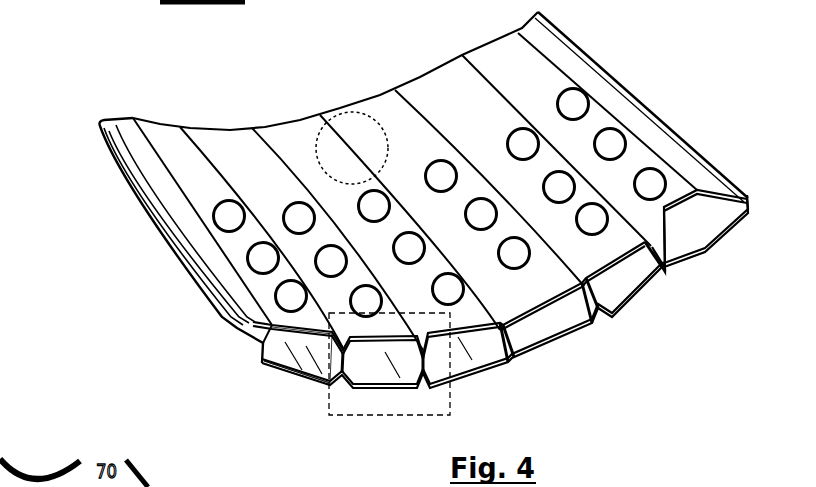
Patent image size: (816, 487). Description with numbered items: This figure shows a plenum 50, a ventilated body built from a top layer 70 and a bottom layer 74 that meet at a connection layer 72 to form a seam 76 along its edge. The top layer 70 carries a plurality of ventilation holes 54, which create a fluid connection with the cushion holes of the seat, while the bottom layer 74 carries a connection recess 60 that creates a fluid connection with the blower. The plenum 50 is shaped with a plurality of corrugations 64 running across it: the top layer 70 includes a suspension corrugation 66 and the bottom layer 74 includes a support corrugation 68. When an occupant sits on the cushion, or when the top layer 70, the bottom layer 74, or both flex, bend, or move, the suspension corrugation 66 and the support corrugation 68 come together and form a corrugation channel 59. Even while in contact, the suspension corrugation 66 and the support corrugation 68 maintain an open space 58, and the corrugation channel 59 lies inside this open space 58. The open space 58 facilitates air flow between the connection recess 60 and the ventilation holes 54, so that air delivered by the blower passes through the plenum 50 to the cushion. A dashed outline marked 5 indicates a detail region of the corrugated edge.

The plenum 50 is at (665, 62).
The ventilation holes 54 is at (575, 101).
The open space 58 is at (541, 378).
The corrugation channel 59 is at (466, 360).
The connection recess 60 is at (366, 136).
The corrugations 64 is at (662, 293).
The suspension corrugation 66 is at (698, 195).
The support corrugation 68 is at (670, 272).
The top layer 70 is at (262, 360).
The connection layer 72 is at (222, 316).
The bottom layer 74 is at (293, 380).
The seam 76 is at (97, 126).
The detail region of FIG. 5 is at (380, 415).